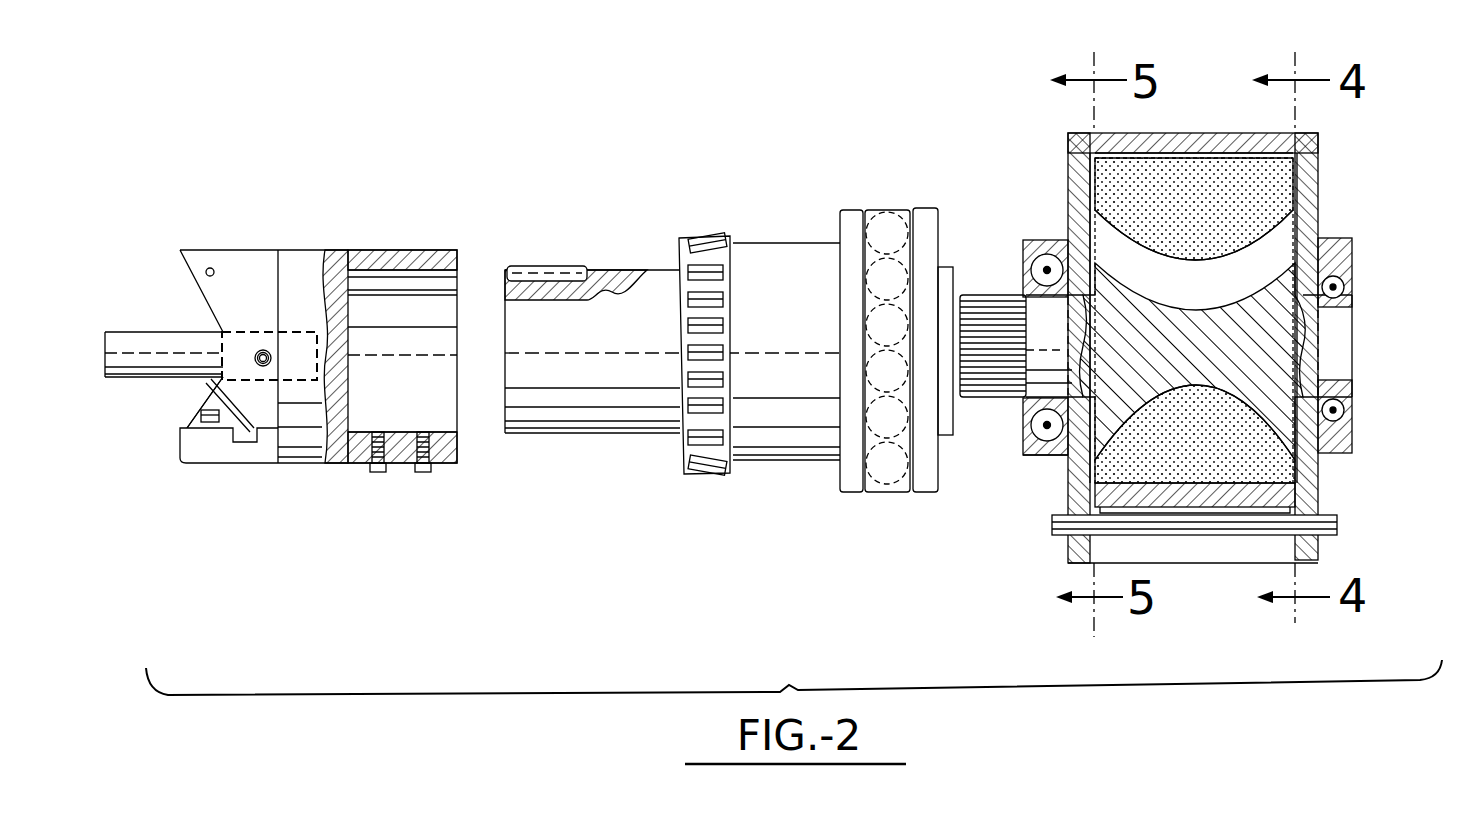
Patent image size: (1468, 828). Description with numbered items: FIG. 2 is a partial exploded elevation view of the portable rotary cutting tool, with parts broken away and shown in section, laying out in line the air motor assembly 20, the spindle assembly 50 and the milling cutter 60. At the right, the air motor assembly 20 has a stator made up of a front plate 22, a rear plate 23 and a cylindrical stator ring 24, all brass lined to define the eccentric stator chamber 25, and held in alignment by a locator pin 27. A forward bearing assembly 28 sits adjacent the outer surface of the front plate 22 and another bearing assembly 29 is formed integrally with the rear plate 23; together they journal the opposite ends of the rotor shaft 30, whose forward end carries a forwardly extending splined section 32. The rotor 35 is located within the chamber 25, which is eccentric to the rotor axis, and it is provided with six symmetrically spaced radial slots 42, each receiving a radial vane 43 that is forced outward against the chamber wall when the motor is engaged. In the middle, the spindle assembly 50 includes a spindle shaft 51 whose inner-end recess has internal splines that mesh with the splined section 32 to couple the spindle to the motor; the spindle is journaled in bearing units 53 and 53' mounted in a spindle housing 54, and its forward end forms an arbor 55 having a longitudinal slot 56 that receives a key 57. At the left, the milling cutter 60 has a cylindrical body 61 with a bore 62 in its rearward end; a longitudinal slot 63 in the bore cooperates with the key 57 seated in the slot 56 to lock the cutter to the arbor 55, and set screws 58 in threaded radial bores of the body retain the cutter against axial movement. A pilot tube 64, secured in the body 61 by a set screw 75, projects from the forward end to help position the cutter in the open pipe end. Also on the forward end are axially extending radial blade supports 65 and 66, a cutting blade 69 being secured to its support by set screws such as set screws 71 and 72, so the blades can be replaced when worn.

The air motor assembly 20 is at (1190, 126).
The front plate 22 is at (1075, 134).
The rear plate 23 is at (1315, 134).
The stator ring 24 is at (1252, 132).
The stator chamber 25 is at (1240, 472).
The locator pin 27 is at (1340, 518).
The forward bearing assembly 28 is at (1043, 456).
The bearing assembly 29 is at (1355, 417).
The rotor shaft 30 is at (1030, 399).
The splined section 32 is at (1001, 293).
The rotor 35 is at (1258, 343).
The radial slots 42 is at (1267, 257).
The radial vane 43 is at (1262, 184).
The spindle assembly 50 is at (789, 240).
The spindle shaft 51 is at (946, 267).
The bearing unit 53 is at (676, 330).
The bearing unit 53' is at (886, 324).
The spindle housing 54 is at (797, 462).
The arbor 55 is at (600, 434).
The longitudinal slot 56 is at (612, 268).
The key 57 is at (545, 266).
The set screws 58 is at (378, 473).
The milling cutter 60 is at (326, 244).
The cylindrical body 61 is at (398, 247).
The bore 62 is at (446, 430).
The longitudinal slot 63 is at (438, 268).
The pilot tube 64 is at (143, 331).
The blade support 65 is at (202, 248).
The blade support 66 is at (207, 456).
The cutting blade 69 is at (191, 424).
The set screw 71 is at (212, 266).
The set screw 72 is at (205, 410).
The set screw 75 is at (280, 362).